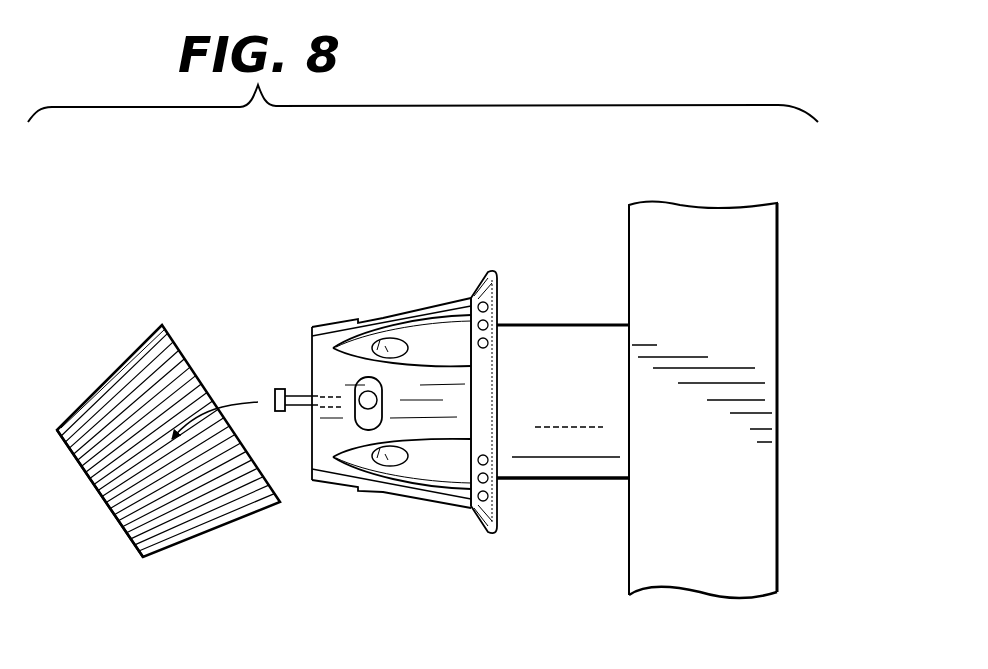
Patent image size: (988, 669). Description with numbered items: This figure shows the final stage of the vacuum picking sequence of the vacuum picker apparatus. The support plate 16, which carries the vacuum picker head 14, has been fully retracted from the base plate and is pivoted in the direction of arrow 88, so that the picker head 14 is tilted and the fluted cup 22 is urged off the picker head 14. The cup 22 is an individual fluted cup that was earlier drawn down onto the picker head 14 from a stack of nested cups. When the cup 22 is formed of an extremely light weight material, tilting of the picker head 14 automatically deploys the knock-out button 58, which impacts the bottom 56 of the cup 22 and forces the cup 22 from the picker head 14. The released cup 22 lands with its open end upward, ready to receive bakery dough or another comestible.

The vacuum picker head 14 is at (497, 236).
The support plate 16 is at (686, 222).
The fluted cup 22 is at (106, 380).
The bottom of the cup 56 is at (105, 500).
The knock-out button 58 is at (278, 389).
The arrow 88 is at (748, 160).